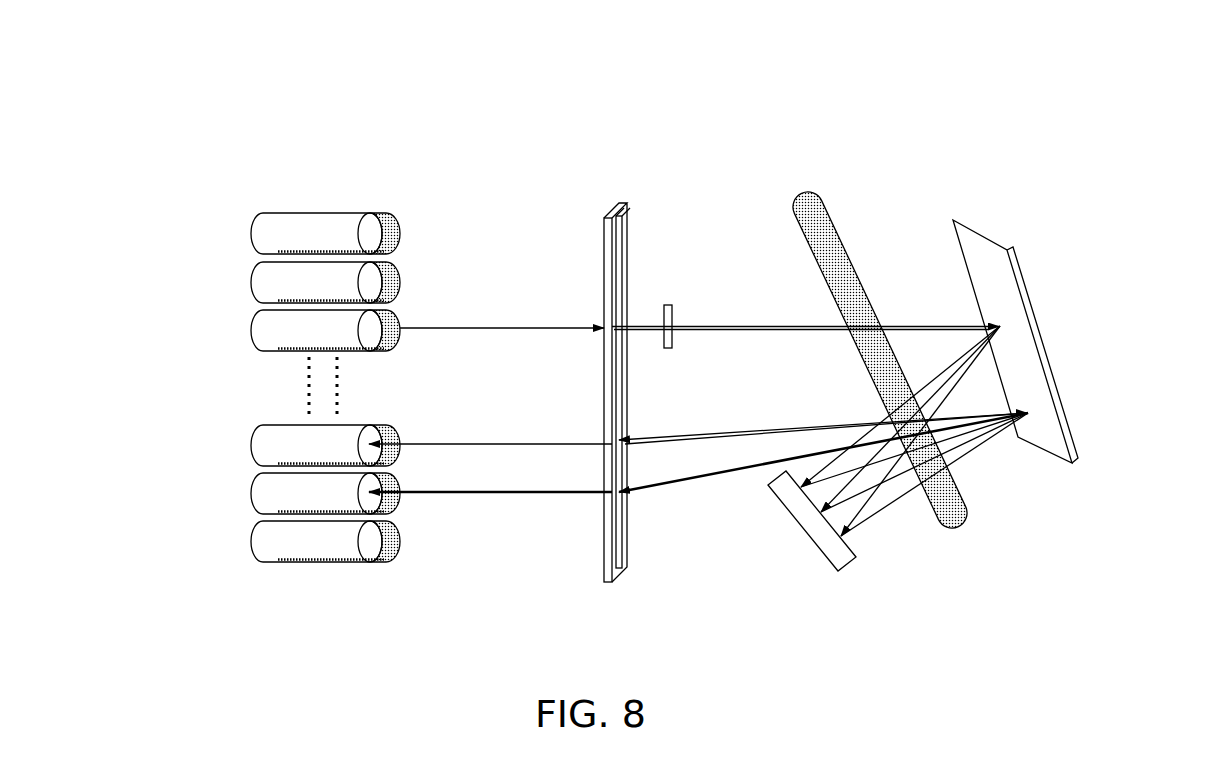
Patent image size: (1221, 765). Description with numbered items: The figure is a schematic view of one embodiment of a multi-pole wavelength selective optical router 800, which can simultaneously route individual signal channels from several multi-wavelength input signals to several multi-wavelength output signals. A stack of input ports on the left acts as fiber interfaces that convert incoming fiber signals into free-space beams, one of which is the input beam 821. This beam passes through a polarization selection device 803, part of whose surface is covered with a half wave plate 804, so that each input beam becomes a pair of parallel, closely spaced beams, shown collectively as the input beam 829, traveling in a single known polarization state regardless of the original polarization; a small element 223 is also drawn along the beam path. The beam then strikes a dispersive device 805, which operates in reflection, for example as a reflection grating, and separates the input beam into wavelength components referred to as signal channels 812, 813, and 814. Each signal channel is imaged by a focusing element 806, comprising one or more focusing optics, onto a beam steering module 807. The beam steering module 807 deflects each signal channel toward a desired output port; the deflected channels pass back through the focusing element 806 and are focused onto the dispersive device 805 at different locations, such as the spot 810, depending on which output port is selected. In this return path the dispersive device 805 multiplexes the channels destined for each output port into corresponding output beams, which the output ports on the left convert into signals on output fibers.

The multi-pole wavelength selective optical router 800 is at (772, 82).
The polarization selection device 803 is at (615, 210).
The half wave plate 804 is at (630, 222).
The optical element 223 is at (668, 302).
The input beam 821 is at (480, 326).
The input beam 829 is at (908, 326).
The focusing element 806 is at (825, 208).
The dispersive device 805 is at (1035, 303).
The spot 810 is at (1037, 413).
The signal channel 812 is at (857, 440).
The signal channel 813 is at (853, 480).
The signal channel 814 is at (908, 458).
The beam steering module 807 is at (815, 550).